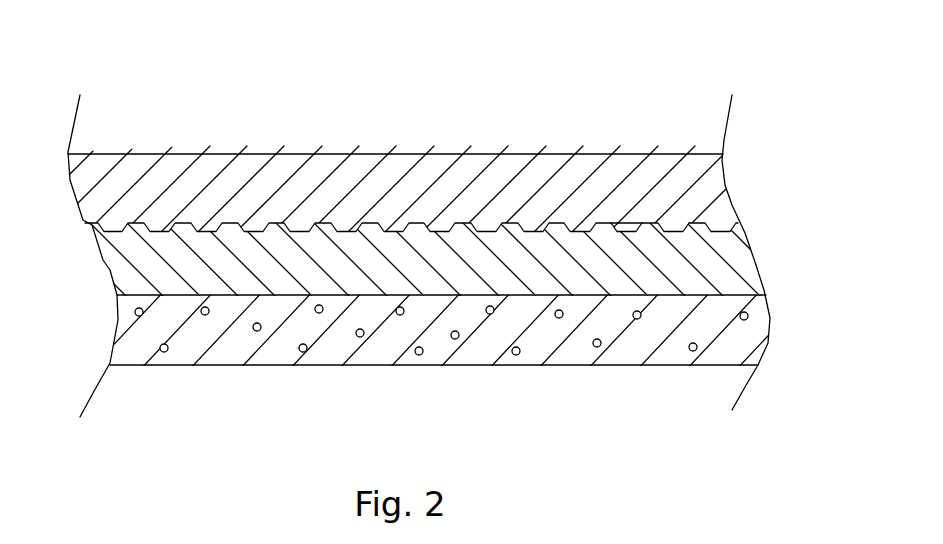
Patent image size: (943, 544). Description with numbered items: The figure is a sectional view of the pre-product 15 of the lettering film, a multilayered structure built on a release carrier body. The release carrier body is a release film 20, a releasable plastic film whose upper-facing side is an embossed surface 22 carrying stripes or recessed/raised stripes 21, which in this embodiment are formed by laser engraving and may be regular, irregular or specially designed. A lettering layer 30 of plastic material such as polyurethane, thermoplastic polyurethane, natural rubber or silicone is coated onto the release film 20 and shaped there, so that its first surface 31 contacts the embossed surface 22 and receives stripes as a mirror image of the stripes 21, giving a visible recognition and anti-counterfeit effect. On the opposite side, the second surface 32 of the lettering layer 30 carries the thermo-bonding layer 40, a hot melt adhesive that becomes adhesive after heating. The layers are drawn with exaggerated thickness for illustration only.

The pre-product 15 is at (172, 125).
The release film 20 is at (575, 175).
The stripes 21 is at (727, 227).
The embossed surface 22 is at (415, 223).
The lettering layer 30 is at (245, 283).
The first surface 31 is at (642, 226).
The second surface 32 is at (583, 296).
The thermo-bonding layer 40 is at (297, 366).